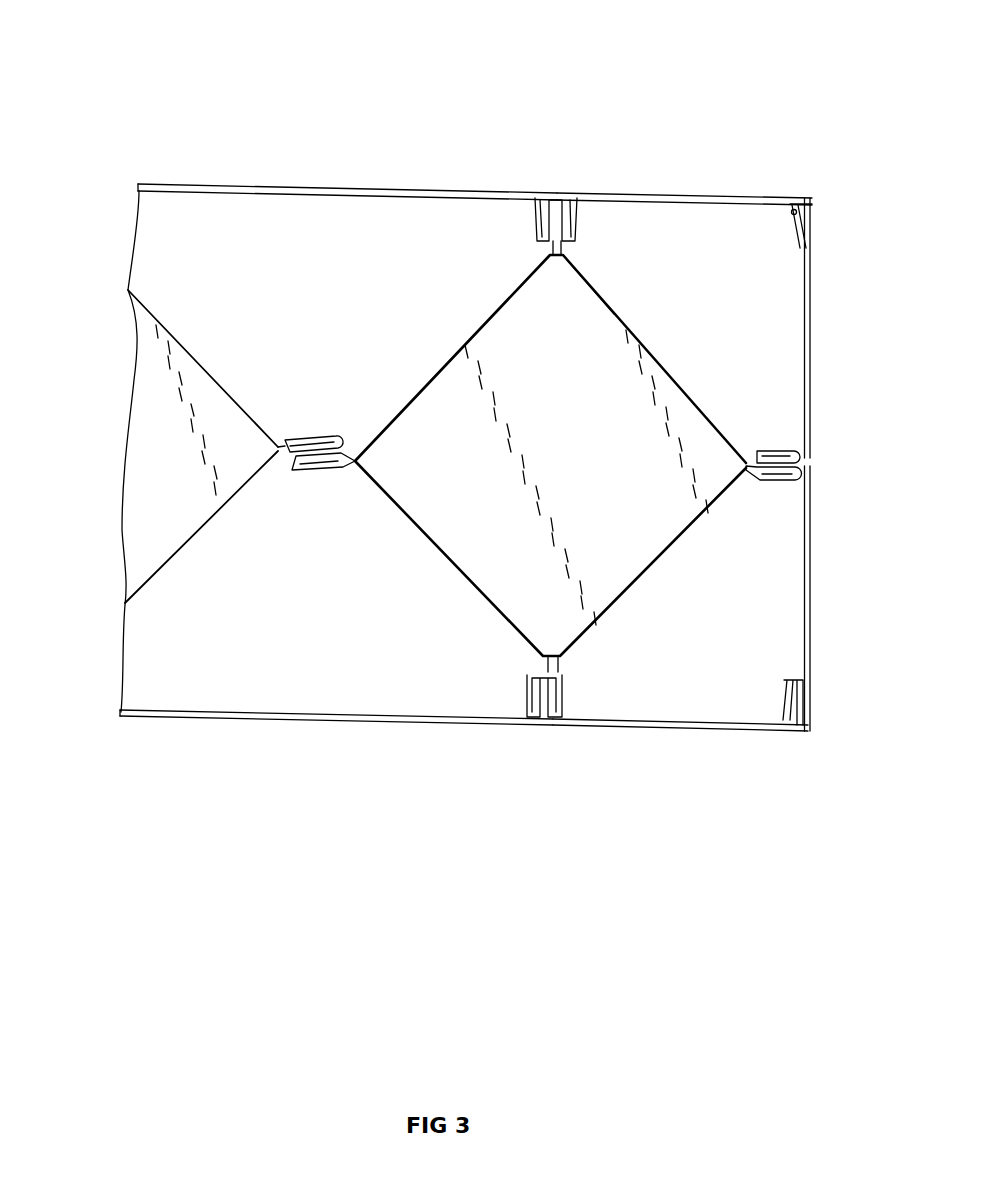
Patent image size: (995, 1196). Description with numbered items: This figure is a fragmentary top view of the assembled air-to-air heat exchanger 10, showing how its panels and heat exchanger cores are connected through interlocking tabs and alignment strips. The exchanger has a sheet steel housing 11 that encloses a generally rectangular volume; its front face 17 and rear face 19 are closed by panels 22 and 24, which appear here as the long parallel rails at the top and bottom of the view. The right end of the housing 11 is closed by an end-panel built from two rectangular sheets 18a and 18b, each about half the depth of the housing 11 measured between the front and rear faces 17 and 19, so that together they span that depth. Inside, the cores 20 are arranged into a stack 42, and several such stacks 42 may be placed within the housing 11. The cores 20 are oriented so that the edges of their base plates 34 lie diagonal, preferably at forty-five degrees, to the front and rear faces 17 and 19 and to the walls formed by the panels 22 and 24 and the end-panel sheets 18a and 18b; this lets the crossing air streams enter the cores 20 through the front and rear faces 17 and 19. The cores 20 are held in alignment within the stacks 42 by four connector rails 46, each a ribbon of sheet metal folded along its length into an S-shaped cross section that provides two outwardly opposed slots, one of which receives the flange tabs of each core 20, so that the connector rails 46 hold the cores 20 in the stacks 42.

The air-to-air heat exchanger 10 is at (759, 132).
The housing 11 is at (777, 156).
The front face 17 is at (133, 771).
The rectangular sheet 18a is at (812, 352).
The rectangular sheet 18b is at (812, 560).
The rear face 19 is at (113, 62).
The core 20 is at (236, 384).
The panel 22 is at (613, 185).
The panel 24 is at (292, 178).
The base plate 34 is at (642, 347).
The stack 42 is at (185, 320).
The connector rail 46 is at (537, 222).